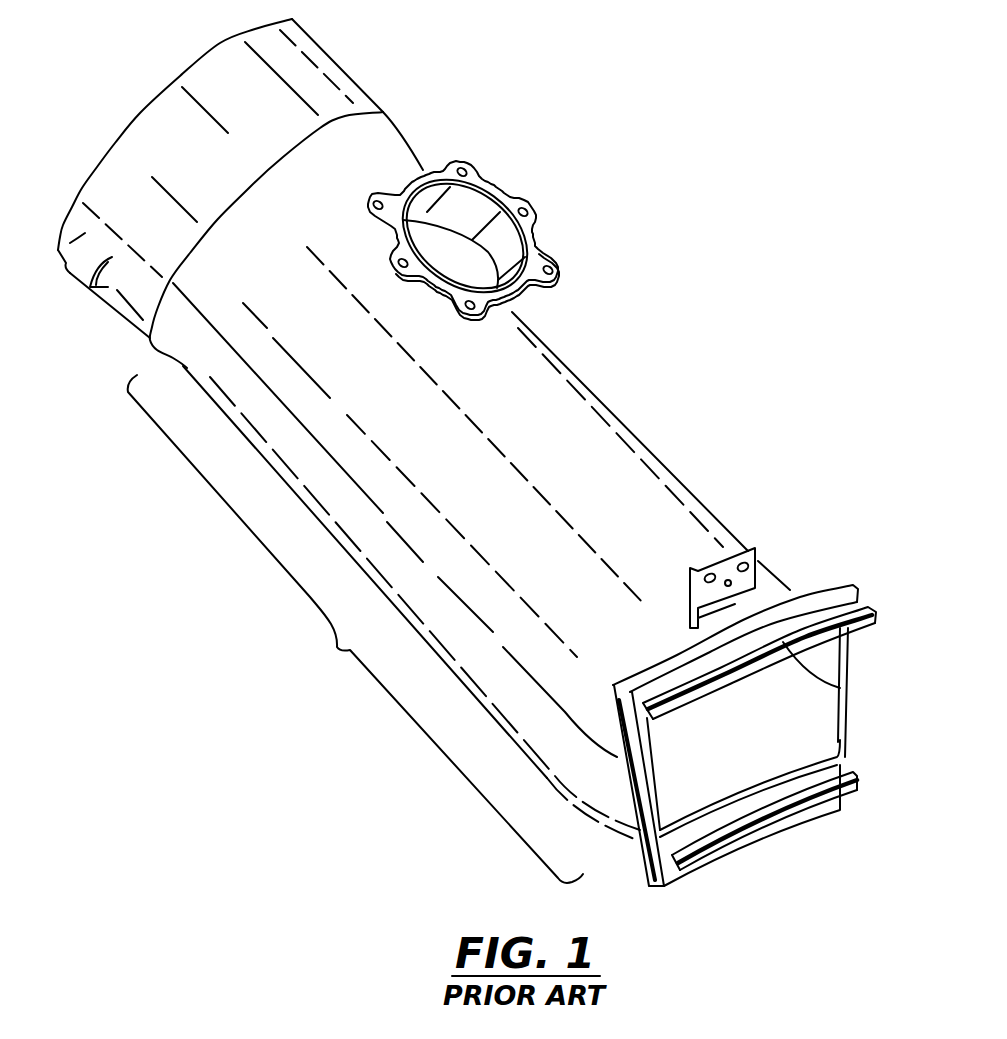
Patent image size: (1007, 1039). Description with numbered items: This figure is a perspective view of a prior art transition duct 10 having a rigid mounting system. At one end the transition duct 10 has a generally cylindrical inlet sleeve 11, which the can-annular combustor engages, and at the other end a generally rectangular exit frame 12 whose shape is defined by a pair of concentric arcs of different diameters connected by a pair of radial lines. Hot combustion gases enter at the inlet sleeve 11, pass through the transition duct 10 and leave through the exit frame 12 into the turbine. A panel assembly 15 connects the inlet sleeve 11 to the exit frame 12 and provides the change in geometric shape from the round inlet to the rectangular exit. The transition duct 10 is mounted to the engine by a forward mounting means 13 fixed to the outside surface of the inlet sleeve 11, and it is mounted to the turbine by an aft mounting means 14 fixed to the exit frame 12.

The transition duct 10 is at (709, 312).
The inlet sleeve 11 is at (147, 124).
The exit frame 12 is at (840, 745).
The forward mounting means 13 is at (70, 272).
The aft mounting means 14 is at (738, 548).
The panel assembly 15 is at (338, 648).